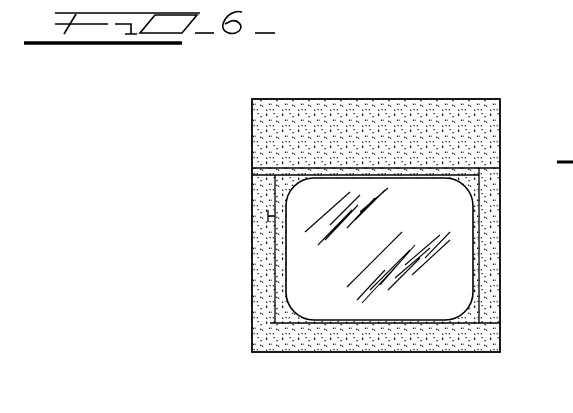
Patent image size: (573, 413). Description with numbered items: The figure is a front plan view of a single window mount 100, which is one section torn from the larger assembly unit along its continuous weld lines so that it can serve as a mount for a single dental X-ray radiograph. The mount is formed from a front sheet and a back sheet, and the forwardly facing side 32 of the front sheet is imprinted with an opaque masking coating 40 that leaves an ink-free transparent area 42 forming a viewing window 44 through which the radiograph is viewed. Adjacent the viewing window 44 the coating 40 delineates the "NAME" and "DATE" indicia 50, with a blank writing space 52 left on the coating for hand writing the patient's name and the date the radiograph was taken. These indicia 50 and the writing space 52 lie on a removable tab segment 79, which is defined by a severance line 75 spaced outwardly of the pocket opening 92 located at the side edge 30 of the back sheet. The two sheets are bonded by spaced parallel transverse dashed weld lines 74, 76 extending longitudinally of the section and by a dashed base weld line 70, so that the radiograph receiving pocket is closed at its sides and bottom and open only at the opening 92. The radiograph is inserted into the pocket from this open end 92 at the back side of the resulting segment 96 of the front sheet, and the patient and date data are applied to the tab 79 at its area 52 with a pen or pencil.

The single window mount 100 is at (197, 135).
The "NAME" and "DATE" indicia 50 is at (316, 90).
The tab segment 79 is at (352, 108).
The pocket opening 92 is at (372, 150).
The severance line 75 is at (396, 174).
The blank writing space 52 is at (433, 115).
The segment of sheet 12 96 is at (466, 85).
The forwardly facing side 32 is at (467, 114).
The masking coating 40 is at (478, 146).
The side edge 30 is at (490, 162).
The transverse dashed weld line 76 is at (482, 190).
The transverse dashed weld line 74 is at (262, 216).
The transparent area 42 is at (302, 236).
The viewing window 44 is at (294, 296).
The dashed base weld line 70 is at (452, 330).